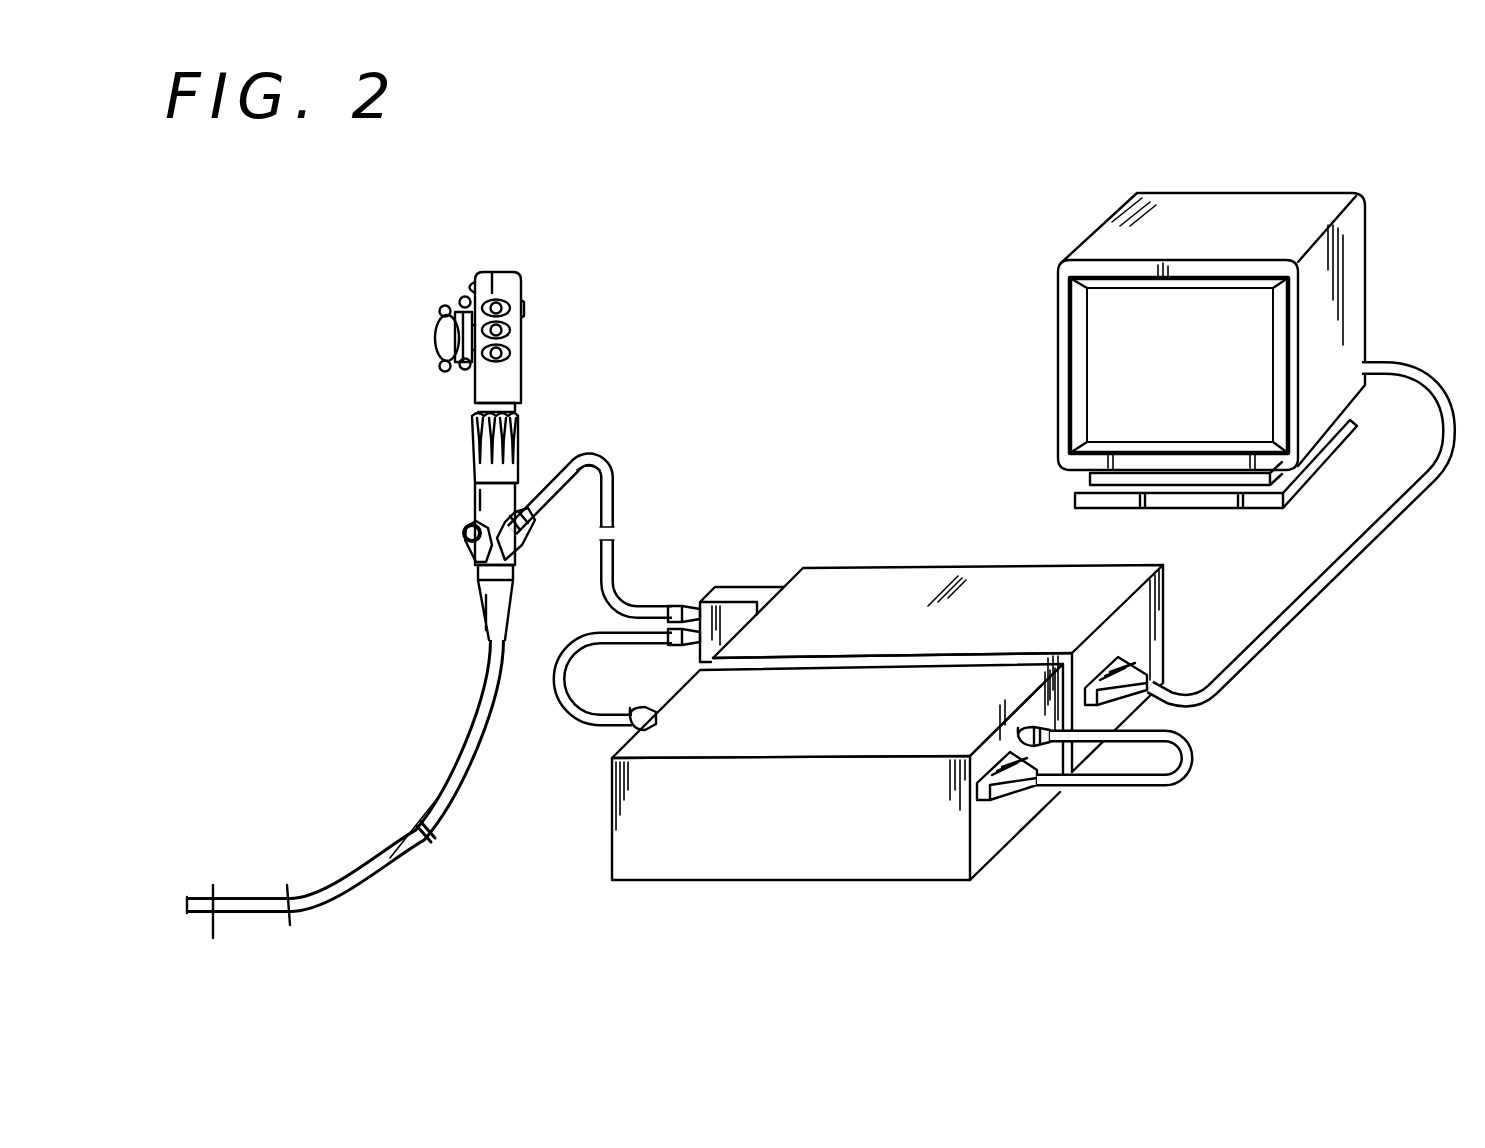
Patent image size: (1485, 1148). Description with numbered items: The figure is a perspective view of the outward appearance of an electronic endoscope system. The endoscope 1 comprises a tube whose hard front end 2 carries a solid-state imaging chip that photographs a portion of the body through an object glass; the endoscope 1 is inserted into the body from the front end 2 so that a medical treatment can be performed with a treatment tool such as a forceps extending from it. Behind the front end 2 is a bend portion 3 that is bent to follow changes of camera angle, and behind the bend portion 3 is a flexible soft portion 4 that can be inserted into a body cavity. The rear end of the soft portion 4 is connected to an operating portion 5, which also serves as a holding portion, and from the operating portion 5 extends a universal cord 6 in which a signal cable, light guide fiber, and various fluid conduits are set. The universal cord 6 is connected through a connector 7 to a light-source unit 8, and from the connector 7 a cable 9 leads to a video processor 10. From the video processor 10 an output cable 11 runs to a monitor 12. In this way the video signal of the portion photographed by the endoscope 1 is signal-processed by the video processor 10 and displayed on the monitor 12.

The endoscope 1 is at (313, 846).
The front end 2 is at (198, 897).
The bend portion 3 is at (253, 897).
The soft portion 4 is at (386, 860).
The operating portion 5 is at (432, 342).
The universal cord 6 is at (614, 482).
The connector 7 is at (733, 612).
The light-source unit 8 is at (907, 592).
The cable 9 is at (567, 712).
The video processor 10 is at (787, 852).
The output cable 11 is at (1303, 621).
The monitor 12 is at (1113, 349).